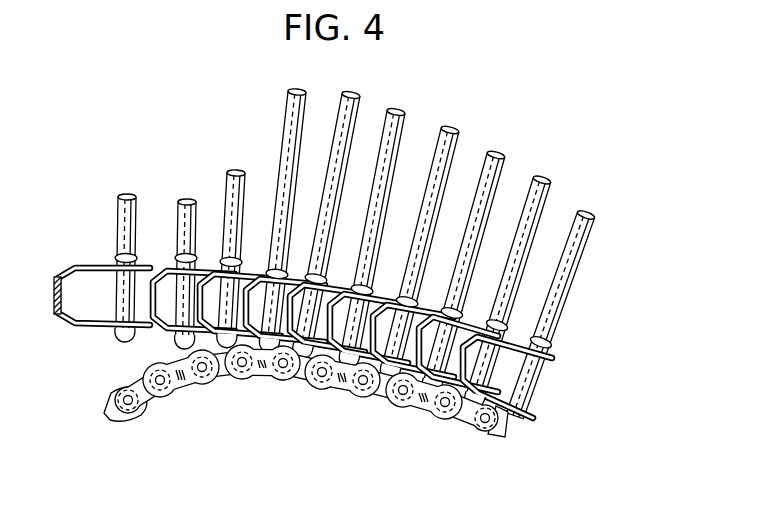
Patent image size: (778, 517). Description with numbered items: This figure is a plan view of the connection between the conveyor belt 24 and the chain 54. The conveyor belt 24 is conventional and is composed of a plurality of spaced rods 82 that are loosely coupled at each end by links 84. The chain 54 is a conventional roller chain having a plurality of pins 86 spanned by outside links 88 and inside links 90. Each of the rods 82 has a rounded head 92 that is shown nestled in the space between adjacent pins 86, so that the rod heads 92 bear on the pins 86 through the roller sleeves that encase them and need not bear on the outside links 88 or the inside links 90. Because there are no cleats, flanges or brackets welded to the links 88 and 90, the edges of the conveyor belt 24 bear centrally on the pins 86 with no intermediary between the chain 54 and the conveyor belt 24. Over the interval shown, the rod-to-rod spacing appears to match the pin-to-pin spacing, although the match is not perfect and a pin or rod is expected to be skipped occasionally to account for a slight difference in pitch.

The conveyor belt 24 is at (588, 256).
The chain 54 is at (270, 400).
The rod 82 is at (397, 150).
The link 84 is at (514, 360).
The pin 86 is at (203, 371).
The outside link 88 is at (266, 378).
The inside link 90 is at (384, 396).
The rounded head 92 is at (163, 350).